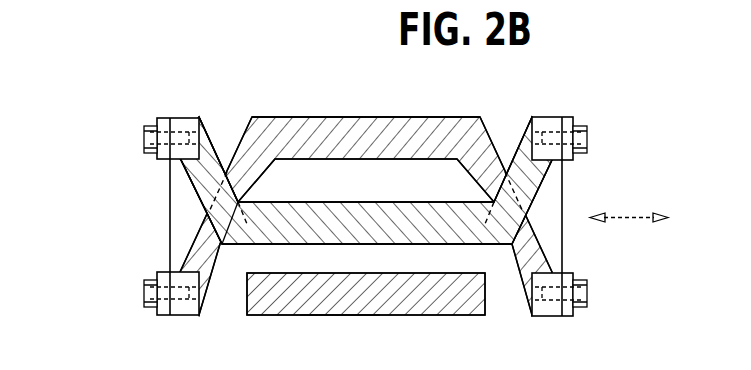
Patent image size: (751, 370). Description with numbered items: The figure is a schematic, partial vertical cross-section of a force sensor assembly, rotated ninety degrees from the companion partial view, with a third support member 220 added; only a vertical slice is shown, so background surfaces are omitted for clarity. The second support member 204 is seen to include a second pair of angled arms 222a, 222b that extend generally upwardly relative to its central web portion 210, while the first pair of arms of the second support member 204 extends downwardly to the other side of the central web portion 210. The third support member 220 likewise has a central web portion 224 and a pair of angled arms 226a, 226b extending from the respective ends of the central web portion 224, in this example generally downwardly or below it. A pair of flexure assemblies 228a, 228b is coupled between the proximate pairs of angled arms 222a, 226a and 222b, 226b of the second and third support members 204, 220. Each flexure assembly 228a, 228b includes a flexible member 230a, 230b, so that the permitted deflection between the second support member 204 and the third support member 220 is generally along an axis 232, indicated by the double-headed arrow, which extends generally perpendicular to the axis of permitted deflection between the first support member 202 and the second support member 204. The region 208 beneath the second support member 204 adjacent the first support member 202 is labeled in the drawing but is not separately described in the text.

The first support member 202 is at (375, 320).
The second support member 204 is at (481, 254).
The gap 208 is at (342, 316).
The central web portion 210 is at (262, 242).
The third support member 220 is at (396, 112).
The angled arm 222a is at (547, 180).
The angled arm 222b is at (192, 188).
The central web portion 224 is at (332, 116).
The angled arm 226a is at (545, 252).
The angled arm 226b is at (188, 242).
The flexure assembly 228a is at (581, 178).
The flexure assembly 228b is at (147, 181).
The flexible member 230a is at (562, 262).
The flexible member 230b is at (170, 258).
The axis 232 is at (648, 213).